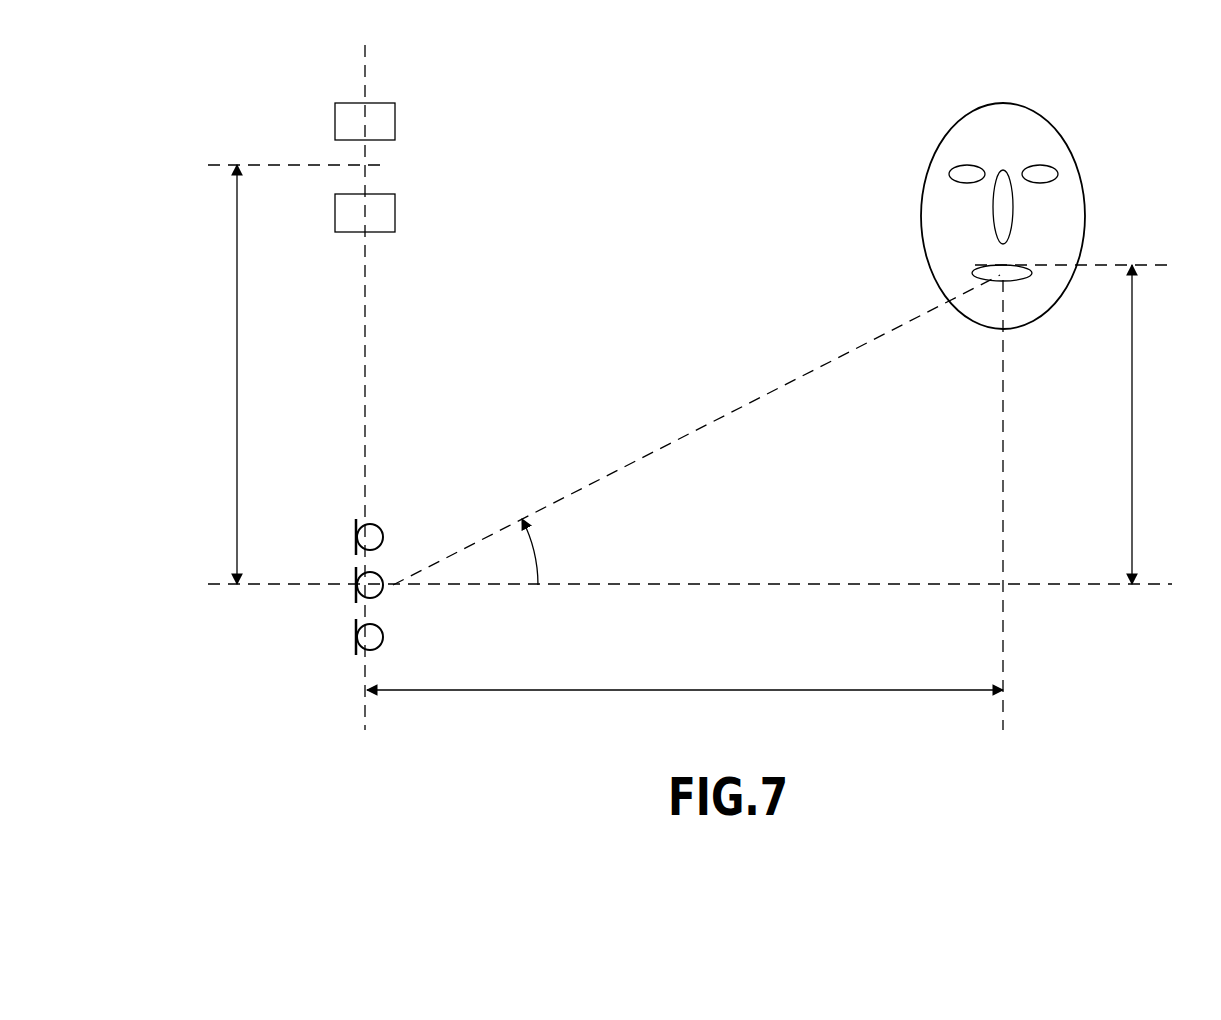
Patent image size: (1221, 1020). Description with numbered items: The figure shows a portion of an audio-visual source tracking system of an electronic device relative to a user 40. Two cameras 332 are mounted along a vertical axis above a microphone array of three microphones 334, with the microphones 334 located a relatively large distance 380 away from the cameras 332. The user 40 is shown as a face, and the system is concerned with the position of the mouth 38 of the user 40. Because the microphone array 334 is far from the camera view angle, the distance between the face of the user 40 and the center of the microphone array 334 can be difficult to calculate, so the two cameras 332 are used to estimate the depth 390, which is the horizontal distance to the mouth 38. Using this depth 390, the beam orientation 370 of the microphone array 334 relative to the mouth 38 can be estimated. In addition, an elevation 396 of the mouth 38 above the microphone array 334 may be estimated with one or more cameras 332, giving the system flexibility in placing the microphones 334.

The cameras 332 is at (396, 124).
The microphones 334 is at (355, 555).
The distance 380 is at (237, 365).
The elevation 396 is at (1133, 422).
The depth 390 is at (686, 692).
The beam orientation 370 is at (545, 550).
The user 40 is at (1075, 155).
The mouth 38 is at (972, 268).